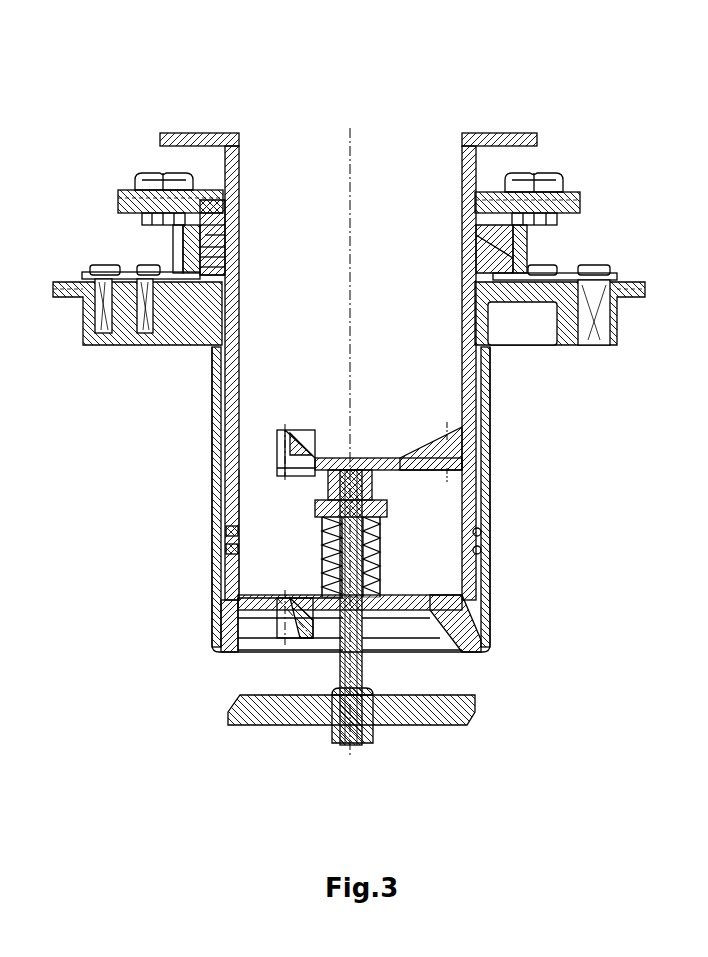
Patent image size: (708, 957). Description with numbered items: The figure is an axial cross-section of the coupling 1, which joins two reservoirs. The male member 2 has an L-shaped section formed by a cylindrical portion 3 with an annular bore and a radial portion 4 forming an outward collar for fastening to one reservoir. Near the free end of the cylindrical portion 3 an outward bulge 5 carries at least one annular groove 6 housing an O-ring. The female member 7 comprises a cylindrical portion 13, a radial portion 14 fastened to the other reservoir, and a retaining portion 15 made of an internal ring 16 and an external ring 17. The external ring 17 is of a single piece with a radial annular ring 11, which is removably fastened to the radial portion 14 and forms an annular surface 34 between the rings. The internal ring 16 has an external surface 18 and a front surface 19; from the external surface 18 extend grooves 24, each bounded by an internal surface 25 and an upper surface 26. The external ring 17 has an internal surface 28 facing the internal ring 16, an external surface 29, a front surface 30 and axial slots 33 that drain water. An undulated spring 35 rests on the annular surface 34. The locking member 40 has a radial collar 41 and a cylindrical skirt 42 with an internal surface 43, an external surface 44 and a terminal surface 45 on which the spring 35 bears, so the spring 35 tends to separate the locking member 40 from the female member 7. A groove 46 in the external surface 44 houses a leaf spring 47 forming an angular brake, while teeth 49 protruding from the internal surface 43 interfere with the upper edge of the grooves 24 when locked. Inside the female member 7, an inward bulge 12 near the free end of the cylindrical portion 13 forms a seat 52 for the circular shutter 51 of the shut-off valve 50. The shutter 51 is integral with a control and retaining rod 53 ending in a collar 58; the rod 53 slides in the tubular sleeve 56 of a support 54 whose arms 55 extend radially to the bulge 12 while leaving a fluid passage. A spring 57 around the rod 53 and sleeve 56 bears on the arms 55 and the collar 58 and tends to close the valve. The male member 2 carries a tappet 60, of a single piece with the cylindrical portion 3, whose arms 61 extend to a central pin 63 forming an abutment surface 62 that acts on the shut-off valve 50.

The coupling 1 is at (528, 76).
The male member 2 is at (536, 131).
The cylindrical portion 3 is at (242, 368).
The radial portion 4 is at (196, 132).
The bulge 5 is at (234, 507).
The annular groove 6 is at (240, 532).
The female member 7 is at (60, 280).
The radial annular ring 11 is at (538, 300).
The bulge 12 is at (213, 633).
The cylindrical portion 13 is at (466, 372).
The radial portion 14 is at (592, 300).
The retaining portion 15 is at (567, 206).
The internal ring 16 is at (236, 285).
The external ring 17 is at (528, 240).
The external surface 18 is at (224, 226).
The front surface 19 is at (224, 212).
The groove 24 is at (232, 258).
The internal surface 25 is at (232, 272).
The upper surface 26 is at (218, 250).
The internal surface 28 is at (528, 252).
The external surface 29 is at (528, 262).
The front surface 30 is at (527, 205).
The slot 33 is at (200, 258).
The annular surface 34 is at (490, 262).
The spring 35 is at (478, 250).
The locking member 40 is at (112, 207).
The radial collar 41 is at (215, 232).
The cylindrical skirt 42 is at (167, 200).
The internal surface 43 is at (208, 225).
The external surface 44 is at (205, 266).
The terminal surface 45 is at (185, 345).
The groove 46 is at (178, 242).
The leaf spring 47 is at (190, 250).
The teeth 49 is at (220, 236).
The shut-off valve 50 is at (380, 745).
The circular shutter 51 is at (434, 726).
The seat 52 is at (470, 650).
The control and retaining rod 53 is at (364, 662).
The support 54 is at (480, 562).
The arm 55 is at (291, 598).
The tubular sleeve 56 is at (384, 592).
The spring 57 is at (382, 542).
The collar 58 is at (478, 492).
The tappet 60 is at (352, 456).
The arm 61 is at (314, 456).
The abutment surface 62 is at (388, 506).
The central pin 63 is at (392, 457).